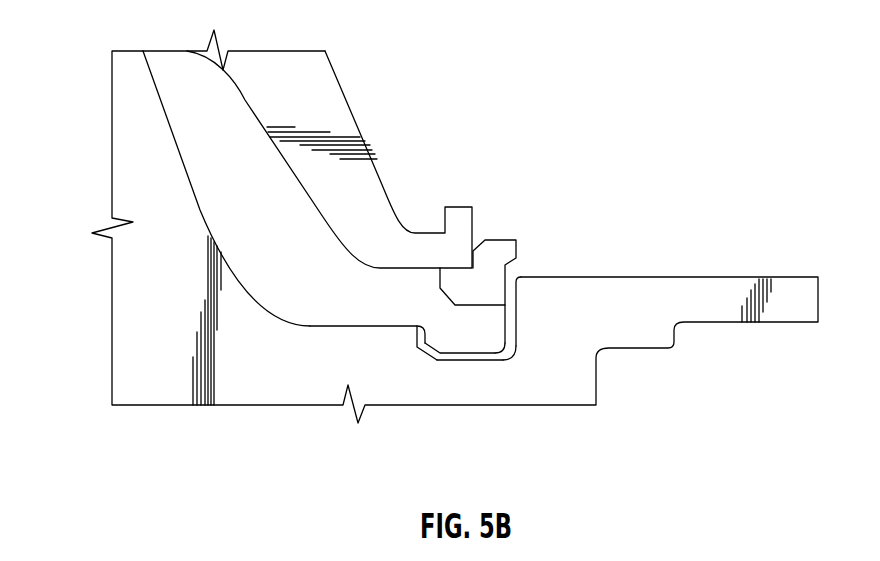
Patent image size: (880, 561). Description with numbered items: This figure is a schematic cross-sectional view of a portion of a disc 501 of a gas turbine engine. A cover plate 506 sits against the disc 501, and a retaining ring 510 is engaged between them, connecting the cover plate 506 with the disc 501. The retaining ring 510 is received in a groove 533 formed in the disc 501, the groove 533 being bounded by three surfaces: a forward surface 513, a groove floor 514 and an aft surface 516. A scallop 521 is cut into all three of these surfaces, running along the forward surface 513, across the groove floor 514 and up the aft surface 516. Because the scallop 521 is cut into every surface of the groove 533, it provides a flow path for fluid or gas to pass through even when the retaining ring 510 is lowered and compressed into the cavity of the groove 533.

The disc 501 is at (133, 123).
The cover plate 506 is at (315, 78).
The retaining ring 510 is at (495, 252).
The forward surface 513 is at (422, 347).
The groove floor 514 is at (462, 361).
The aft surface 516 is at (497, 348).
The scallop 521 is at (512, 312).
The groove 533 is at (458, 368).